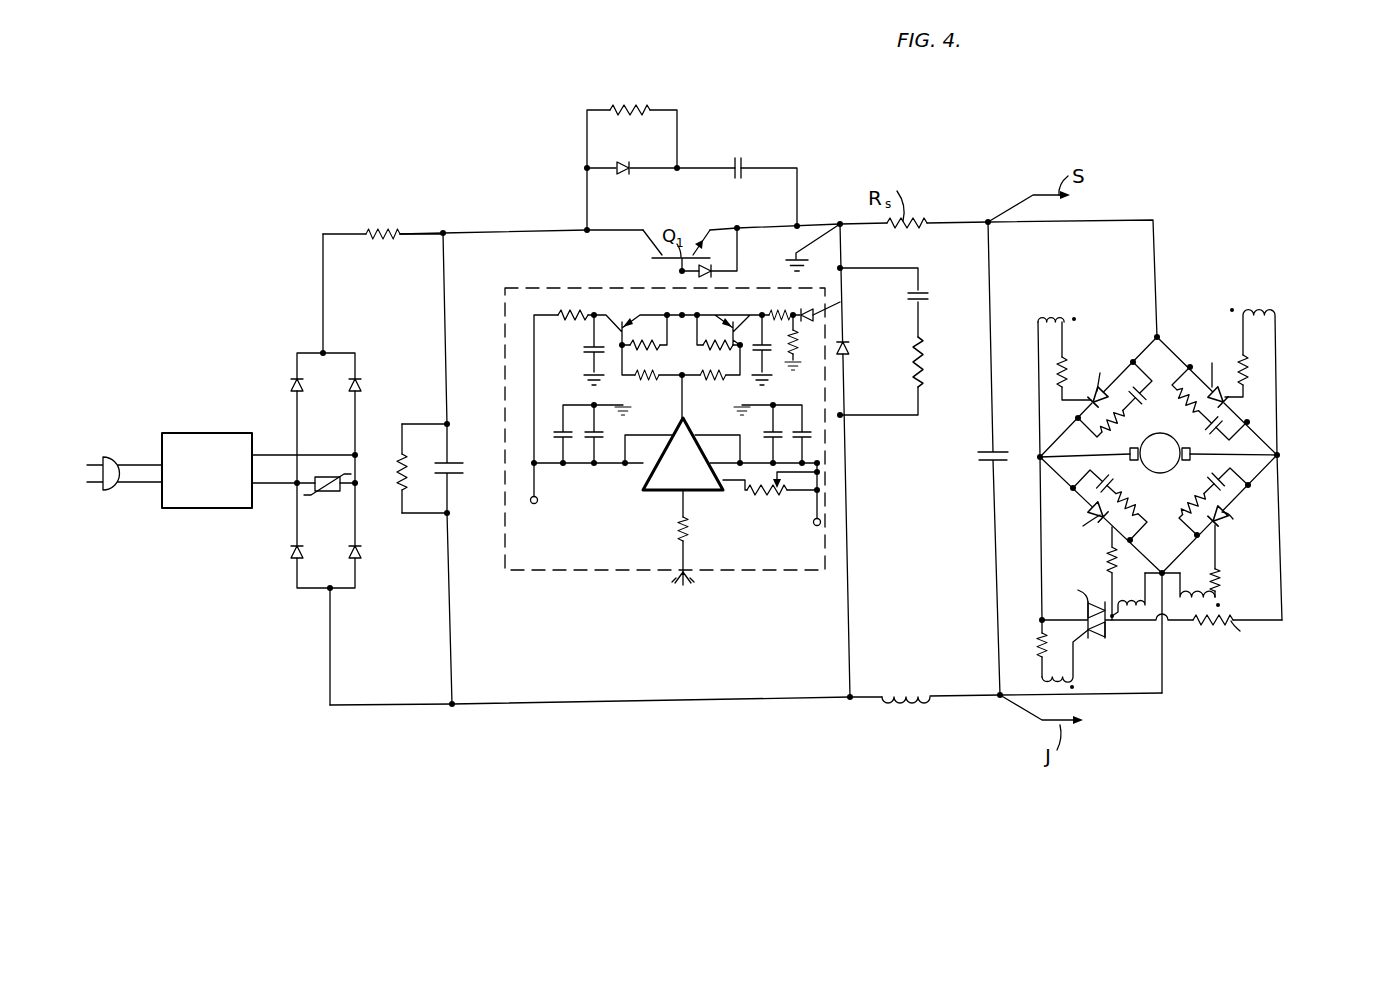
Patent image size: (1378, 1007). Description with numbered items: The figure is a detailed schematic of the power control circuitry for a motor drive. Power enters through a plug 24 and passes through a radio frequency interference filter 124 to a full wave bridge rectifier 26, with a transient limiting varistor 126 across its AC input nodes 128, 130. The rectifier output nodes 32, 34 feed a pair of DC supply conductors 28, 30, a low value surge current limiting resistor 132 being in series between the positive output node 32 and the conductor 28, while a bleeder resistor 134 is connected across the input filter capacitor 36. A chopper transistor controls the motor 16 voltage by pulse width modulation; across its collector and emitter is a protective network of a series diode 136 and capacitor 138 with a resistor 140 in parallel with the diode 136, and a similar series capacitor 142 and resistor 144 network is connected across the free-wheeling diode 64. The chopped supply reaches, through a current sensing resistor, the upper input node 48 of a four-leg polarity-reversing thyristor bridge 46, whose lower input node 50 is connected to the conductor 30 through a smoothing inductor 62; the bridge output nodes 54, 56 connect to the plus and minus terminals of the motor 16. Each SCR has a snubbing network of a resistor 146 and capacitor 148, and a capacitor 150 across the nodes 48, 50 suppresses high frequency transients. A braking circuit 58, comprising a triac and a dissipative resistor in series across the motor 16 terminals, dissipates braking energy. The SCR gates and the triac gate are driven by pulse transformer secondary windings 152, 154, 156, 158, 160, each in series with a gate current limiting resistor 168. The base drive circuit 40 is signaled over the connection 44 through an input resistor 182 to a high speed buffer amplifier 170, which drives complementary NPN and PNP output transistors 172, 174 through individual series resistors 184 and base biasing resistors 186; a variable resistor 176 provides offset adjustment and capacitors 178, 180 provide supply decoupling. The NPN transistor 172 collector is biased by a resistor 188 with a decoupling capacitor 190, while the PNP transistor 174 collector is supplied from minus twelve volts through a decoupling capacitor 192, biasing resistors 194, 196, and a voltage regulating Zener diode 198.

The motor 16 is at (1164, 434).
The plug 24 is at (103, 457).
The full wave bridge rectifier 26 is at (266, 326).
The DC supply conductor 28 is at (505, 232).
The DC supply conductor 30 is at (393, 706).
The bridge output node 32 is at (325, 350).
The bridge output node 34 is at (329, 590).
The input filter capacitor 36 is at (455, 458).
The base drive circuit 40 is at (540, 573).
The connection 44 is at (678, 569).
The thyristor bridge 46 is at (1272, 246).
The input node 48 is at (1158, 336).
The input node 50 is at (1163, 569).
The output node 54 is at (1038, 456).
The output node 56 is at (1280, 454).
The braking circuit 58 is at (1303, 629).
The smoothing inductor 62 is at (925, 688).
The free-wheeling diode 64 is at (847, 352).
The radio frequency interference filter 124 is at (218, 432).
The transient limiting varistor 126 is at (329, 494).
The AC input node 128 is at (298, 492).
The AC input node 130 is at (356, 453).
The surge current limiting resistor 132 is at (377, 229).
The bleeder resistor 134 is at (405, 485).
The diode 136 is at (617, 165).
The capacitor 138 is at (747, 160).
The resistor 140 is at (620, 106).
The capacitor 142 is at (921, 293).
The resistor 144 is at (923, 382).
The resistor 146 is at (1130, 411).
The capacitor 148 is at (1143, 392).
The capacitor 150 is at (988, 462).
The secondary winding 152 is at (1060, 317).
The secondary winding 154 is at (1221, 603).
The secondary winding 156 is at (1266, 312).
The secondary winding 158 is at (1115, 623).
The secondary winding 160 is at (1072, 684).
The gate current limiting resistor 168 is at (1065, 360).
The buffer amplifier 170 is at (645, 480).
The NPN output transistor 172 is at (627, 323).
The PNP output transistor 174 is at (738, 323).
The variable resistor 176 is at (764, 494).
The capacitor 178 is at (683, 434).
The capacitor 180 is at (561, 427).
The input resistor 182 is at (690, 542).
The series resistor 184 is at (657, 380).
The base biasing resistor 186 is at (650, 348).
The biasing resistor 188 is at (563, 313).
The decoupling capacitor 190 is at (588, 345).
The decoupling capacitor 192 is at (768, 372).
The biasing resistor 194 is at (771, 311).
The biasing resistor 196 is at (823, 323).
The voltage regulating Zener diode 198 is at (823, 303).